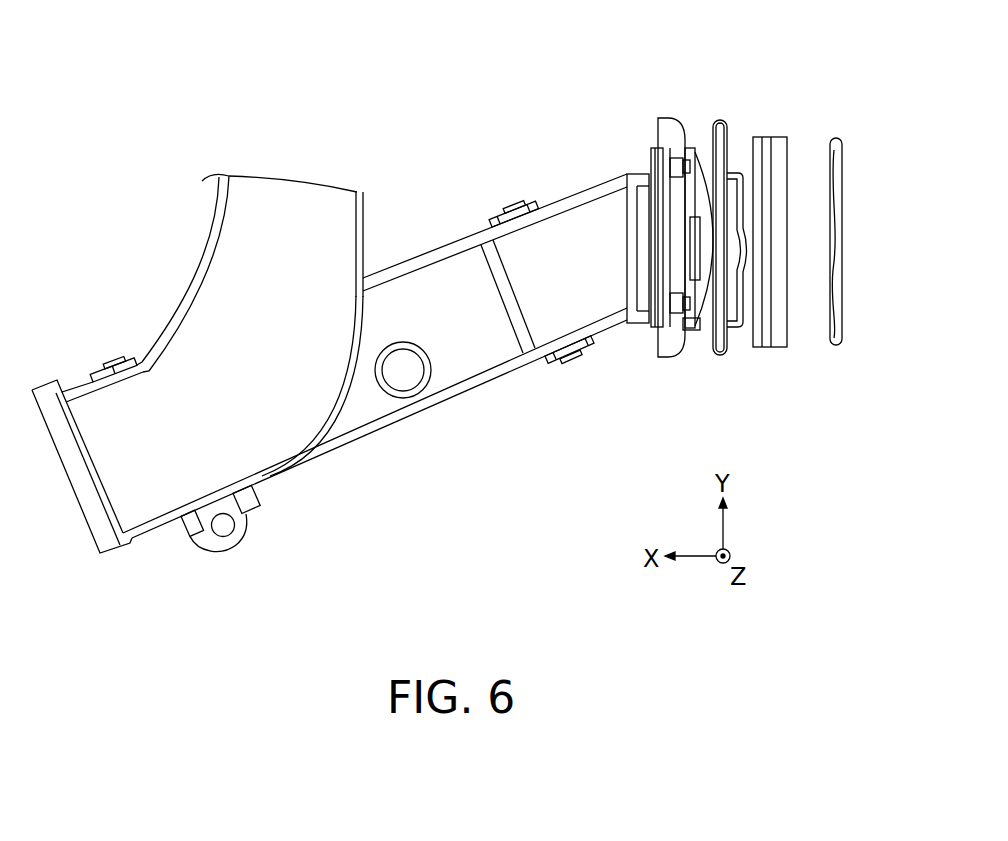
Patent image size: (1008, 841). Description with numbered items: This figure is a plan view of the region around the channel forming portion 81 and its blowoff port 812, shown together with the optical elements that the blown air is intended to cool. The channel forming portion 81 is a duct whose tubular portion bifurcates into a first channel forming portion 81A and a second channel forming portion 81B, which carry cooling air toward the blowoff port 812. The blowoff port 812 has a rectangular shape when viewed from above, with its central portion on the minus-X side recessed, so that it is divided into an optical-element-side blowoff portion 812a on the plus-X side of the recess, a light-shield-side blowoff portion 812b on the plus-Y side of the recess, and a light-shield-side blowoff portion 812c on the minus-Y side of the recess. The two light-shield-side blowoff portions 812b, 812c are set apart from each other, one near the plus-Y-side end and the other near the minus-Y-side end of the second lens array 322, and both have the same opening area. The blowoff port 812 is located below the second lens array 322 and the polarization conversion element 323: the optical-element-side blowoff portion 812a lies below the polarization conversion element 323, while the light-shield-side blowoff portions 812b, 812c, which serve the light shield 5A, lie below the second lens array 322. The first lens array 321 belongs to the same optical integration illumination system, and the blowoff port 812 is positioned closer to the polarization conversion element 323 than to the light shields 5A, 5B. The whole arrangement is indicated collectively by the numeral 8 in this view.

The light source device 8 is at (449, 309).
The channel forming portion 81 is at (389, 323).
The first channel forming portion 81A is at (343, 217).
The second channel forming portion 81B is at (365, 410).
The blowoff port 812 is at (649, 239).
The optical-element-side blowoff portion 812a is at (643, 300).
The light-shield-side blowoff portion 812b is at (695, 162).
The light-shield-side blowoff portion 812c is at (695, 330).
The first lens array 321 is at (842, 140).
The second lens array 322 is at (735, 160).
The polarization conversion element 323 is at (665, 118).
The light shield 5A is at (777, 211).
The light shield 5B is at (782, 138).